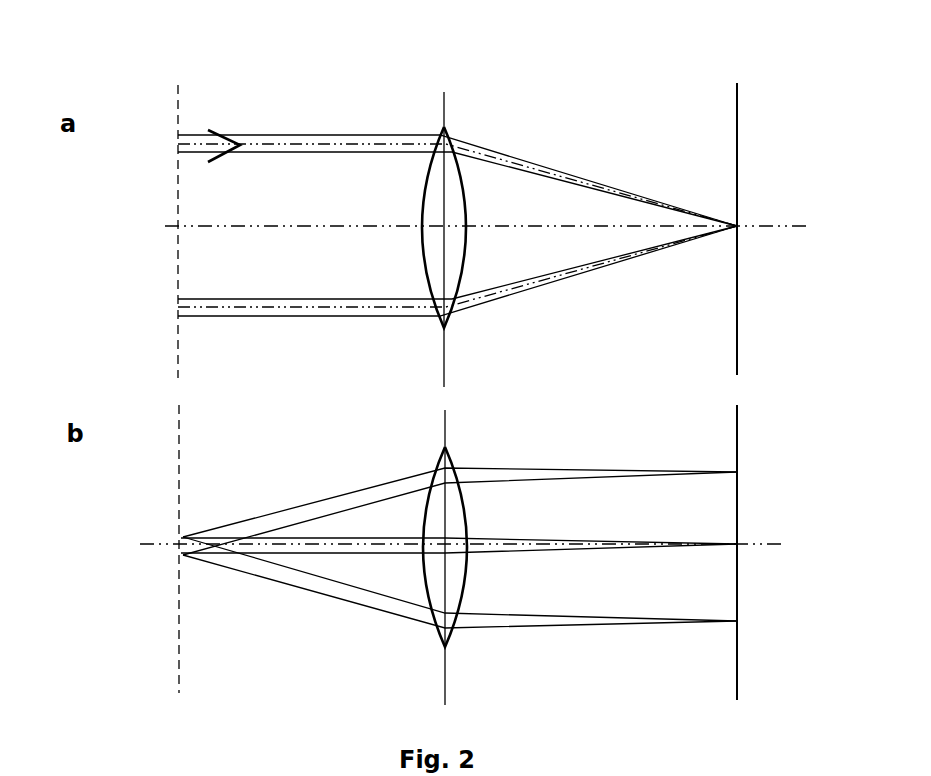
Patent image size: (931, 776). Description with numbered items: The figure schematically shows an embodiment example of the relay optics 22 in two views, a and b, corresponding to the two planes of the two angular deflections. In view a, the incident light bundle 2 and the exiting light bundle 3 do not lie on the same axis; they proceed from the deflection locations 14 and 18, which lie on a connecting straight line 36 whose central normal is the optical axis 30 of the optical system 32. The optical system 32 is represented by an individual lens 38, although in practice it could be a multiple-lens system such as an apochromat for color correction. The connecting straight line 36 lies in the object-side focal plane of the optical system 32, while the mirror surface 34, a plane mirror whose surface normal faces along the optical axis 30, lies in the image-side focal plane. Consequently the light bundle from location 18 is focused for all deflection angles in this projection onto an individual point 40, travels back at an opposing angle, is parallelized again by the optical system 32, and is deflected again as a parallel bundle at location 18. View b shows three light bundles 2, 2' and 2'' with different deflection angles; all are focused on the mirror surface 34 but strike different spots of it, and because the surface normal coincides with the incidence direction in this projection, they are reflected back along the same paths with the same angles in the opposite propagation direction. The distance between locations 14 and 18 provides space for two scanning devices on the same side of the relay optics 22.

The incident light bundle 2 is at (320, 90).
The light bundle 2' is at (460, 497).
The light bundle 2'' is at (460, 617).
The exiting light bundle 3 is at (198, 309).
The deflection location 14 is at (178, 143).
The deflection location 18 is at (178, 308).
The relay optics 22 is at (590, 55).
The optical axis 30 is at (783, 224).
The optical system 32 is at (463, 122).
The mirror surface 34 is at (738, 345).
The connecting straight line 36 is at (170, 225).
The individual lens 38 is at (437, 270).
The point 40 is at (737, 226).